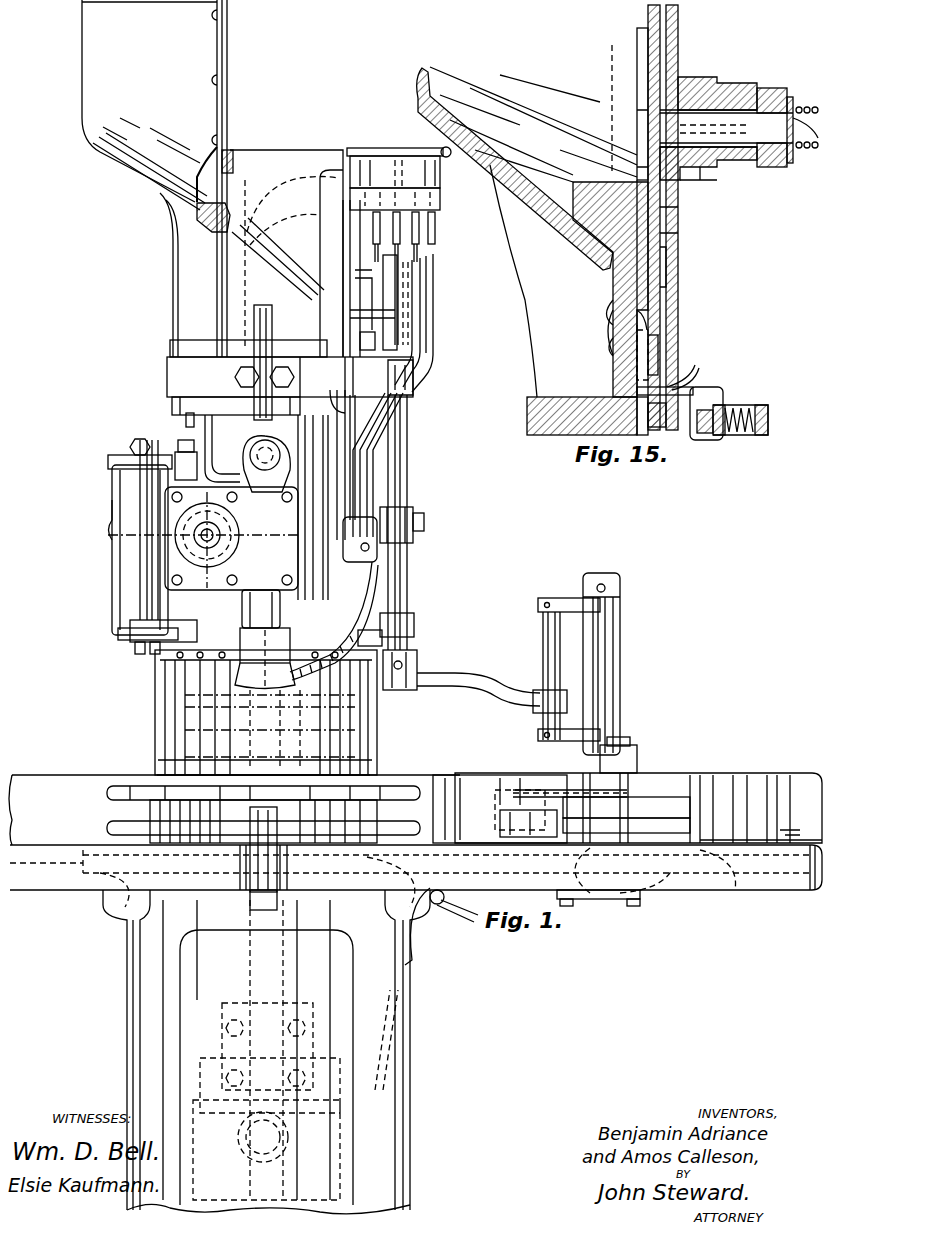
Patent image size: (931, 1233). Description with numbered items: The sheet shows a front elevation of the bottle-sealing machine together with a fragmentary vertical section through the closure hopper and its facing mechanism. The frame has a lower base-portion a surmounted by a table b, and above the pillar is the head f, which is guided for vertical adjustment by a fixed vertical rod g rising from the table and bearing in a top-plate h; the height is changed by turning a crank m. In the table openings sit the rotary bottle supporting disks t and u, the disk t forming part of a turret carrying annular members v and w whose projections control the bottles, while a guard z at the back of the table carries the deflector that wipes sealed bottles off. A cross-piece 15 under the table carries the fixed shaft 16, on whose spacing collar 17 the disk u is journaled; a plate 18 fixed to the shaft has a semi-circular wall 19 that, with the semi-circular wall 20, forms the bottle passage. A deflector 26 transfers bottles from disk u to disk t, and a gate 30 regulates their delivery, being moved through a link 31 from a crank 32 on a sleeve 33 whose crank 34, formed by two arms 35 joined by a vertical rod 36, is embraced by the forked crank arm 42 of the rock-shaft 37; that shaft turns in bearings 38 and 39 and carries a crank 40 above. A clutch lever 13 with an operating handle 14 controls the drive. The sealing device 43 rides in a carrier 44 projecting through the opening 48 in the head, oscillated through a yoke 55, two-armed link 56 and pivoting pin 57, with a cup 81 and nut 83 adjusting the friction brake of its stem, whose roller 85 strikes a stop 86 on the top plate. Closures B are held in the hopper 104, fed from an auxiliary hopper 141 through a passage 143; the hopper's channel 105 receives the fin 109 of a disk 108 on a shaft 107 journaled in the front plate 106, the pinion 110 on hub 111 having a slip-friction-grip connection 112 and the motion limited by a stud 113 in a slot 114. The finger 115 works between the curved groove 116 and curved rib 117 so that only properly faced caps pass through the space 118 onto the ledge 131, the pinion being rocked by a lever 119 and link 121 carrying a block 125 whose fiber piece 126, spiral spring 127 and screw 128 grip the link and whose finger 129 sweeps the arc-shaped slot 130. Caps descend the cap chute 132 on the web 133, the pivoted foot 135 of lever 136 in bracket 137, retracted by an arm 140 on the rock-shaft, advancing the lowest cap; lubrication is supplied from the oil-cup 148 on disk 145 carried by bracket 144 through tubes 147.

In FIG. 1, the auxiliary hopper 141 is at (149, 178).
In FIG. 1, the passage 143 is at (236, 160).
In FIG. 1, the hopper 104 is at (262, 188).
In FIG. 15, the hopper 104 is at (600, 93).
In FIG. 1, the bracket 144 is at (278, 241).
In FIG. 1, the oil-cup 148 is at (440, 183).
In FIG. 1, the disk 145 is at (440, 203).
In FIG. 1, the crank 40 is at (428, 296).
In FIG. 1, the lever 119 is at (395, 320).
In FIG. 1, the finger 129 is at (360, 315).
In FIG. 15, the finger 129 is at (660, 385).
In FIG. 1, the vertical rod g is at (274, 330).
In FIG. 1, the top-plate h is at (168, 378).
In FIG. 1, the bearing 39 is at (415, 385).
In FIG. 1, the stop 86 is at (200, 438).
In FIG. 1, the roller 85 is at (220, 448).
In FIG. 1, the nut 83 is at (275, 512).
In FIG. 1, the yoke 55 is at (118, 517).
In FIG. 1, the pivoting pin 57 is at (170, 595).
In FIG. 1, the opening 48 is at (215, 587).
In FIG. 1, the two-armed link 56 is at (165, 630).
In FIG. 1, the cup 81 is at (222, 538).
In FIG. 1, the carrier 44 is at (313, 507).
In FIG. 1, the web 133 is at (330, 467).
In FIG. 1, the cap chute 132 is at (333, 493).
In FIG. 1, the tubes 147 is at (395, 442).
In FIG. 1, the rock-shaft 37 is at (408, 578).
In FIG. 1, the arm 140 is at (425, 533).
In FIG. 1, the bracket 137 is at (380, 550).
In FIG. 1, the lever 136 is at (375, 598).
In FIG. 1, the bearing 38 is at (411, 645).
In FIG. 1, the head f is at (334, 621).
In FIG. 1, the sealing device 43 is at (244, 628).
In FIG. 1, the pivoted foot 135 is at (314, 668).
In FIG. 1, the cylinder S is at (274, 712).
In FIG. 1, the cylinder rim S' is at (277, 741).
In FIG. 1, the forked crank arm 42 is at (462, 690).
In FIG. 1, the fixed shaft 16 is at (608, 573).
In FIG. 1, the sleeve 33 is at (620, 686).
In FIG. 1, the crank 34 is at (540, 676).
In FIG. 1, the arms 35 is at (570, 736).
In FIG. 1, the vertical rod 36 is at (552, 684).
In FIG. 1, the crank 32 is at (632, 756).
In FIG. 1, the guard z is at (40, 782).
In FIG. 1, the annular member v is at (140, 785).
In FIG. 1, the annular member w is at (375, 795).
In FIG. 1, the rotary bottle supporting disk t is at (332, 861).
In FIG. 1, the table b is at (60, 893).
In FIG. 1, the base-portion of the frame a is at (400, 1057).
In FIG. 1, the clutch lever 13 is at (415, 945).
In FIG. 1, the operating handle 14 is at (455, 920).
In FIG. 1, the semi-circular wall 19 is at (664, 782).
In FIG. 1, the semi-circular wall 20 is at (744, 782).
In FIG. 1, the plate 18 is at (648, 818).
In FIG. 1, the deflector 26 is at (450, 785).
In FIG. 1, the link 31 is at (570, 806).
In FIG. 1, the gate 30 is at (522, 838).
In FIG. 1, the cross-piece 15 is at (610, 899).
In FIG. 1, the spacing collar 17 is at (660, 883).
In FIG. 1, the rotary bottle supporting disk u is at (740, 885).
In FIG. 1, the crank m is at (793, 832).
In FIG. 15, the channel 105 is at (516, 185).
In FIG. 15, the fin 109 is at (600, 240).
In FIG. 15, the disk 108 is at (660, 50).
In FIG. 15, the pinion 110 is at (732, 90).
In FIG. 15, the shaft 107 is at (736, 165).
In FIG. 15, the hub 111 is at (710, 180).
In FIG. 15, the slip-friction-grip connection 112 is at (790, 105).
In FIG. 15, the stud 113 is at (678, 237).
In FIG. 15, the slot 114 is at (678, 252).
In FIG. 15, the plate 106 is at (678, 285).
In FIG. 15, the finger 115 is at (612, 318).
In FIG. 15, the curved groove 116 is at (612, 338).
In FIG. 15, the curved rib 117 is at (650, 315).
In FIG. 15, the closure B is at (630, 358).
In FIG. 15, the space 118 is at (635, 385).
In FIG. 15, the arc-shaped slot 130 is at (685, 372).
In FIG. 15, the link 121 is at (706, 445).
In FIG. 15, the fiber piece 126 is at (730, 400).
In FIG. 15, the spiral spring 127 is at (755, 410).
In FIG. 15, the screw 128 is at (770, 418).
In FIG. 15, the block 125 is at (738, 436).
In FIG. 15, the ledge 131 is at (610, 435).